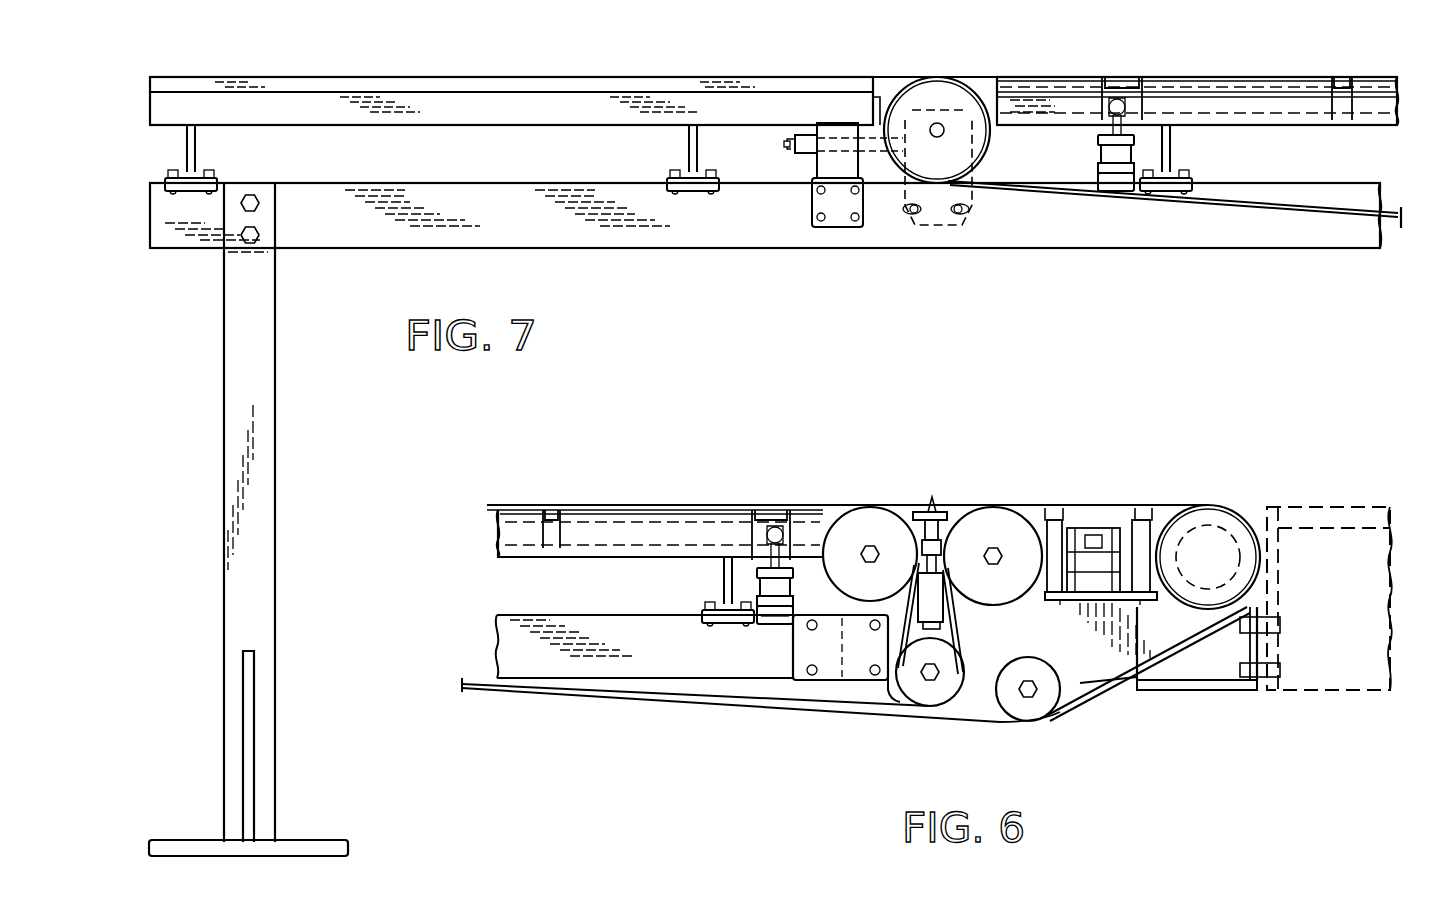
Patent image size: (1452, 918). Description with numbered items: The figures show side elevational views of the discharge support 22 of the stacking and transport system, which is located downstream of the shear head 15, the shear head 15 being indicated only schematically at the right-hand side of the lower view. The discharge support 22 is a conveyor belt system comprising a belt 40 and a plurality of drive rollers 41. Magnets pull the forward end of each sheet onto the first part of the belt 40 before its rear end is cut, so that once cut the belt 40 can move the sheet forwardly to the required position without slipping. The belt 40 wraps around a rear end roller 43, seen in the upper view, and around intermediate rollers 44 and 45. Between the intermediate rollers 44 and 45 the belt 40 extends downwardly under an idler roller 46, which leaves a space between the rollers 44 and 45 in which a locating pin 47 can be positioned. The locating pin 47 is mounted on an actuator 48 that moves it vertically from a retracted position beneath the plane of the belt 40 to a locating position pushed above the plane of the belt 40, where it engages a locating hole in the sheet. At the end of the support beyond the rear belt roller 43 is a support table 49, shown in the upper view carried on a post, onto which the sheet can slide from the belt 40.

In FIG. 6, the shear head 15 is at (1265, 490).
In FIG. 6, the discharge support 22 is at (1106, 462).
In FIG. 7, the belt 40 is at (1085, 76).
In FIG. 6, the belt 40 is at (643, 505).
In FIG. 6, the drive rollers 41 is at (1205, 520).
In FIG. 7, the rear end roller 43 is at (1002, 147).
In FIG. 6, the intermediate roller 44 is at (858, 525).
In FIG. 6, the intermediate roller 45 is at (1000, 523).
In FIG. 6, the idler roller 46 is at (930, 692).
In FIG. 6, the locating pin 47 is at (943, 539).
In FIG. 6, the actuator 48 is at (950, 590).
In FIG. 7, the support table 49 is at (565, 70).